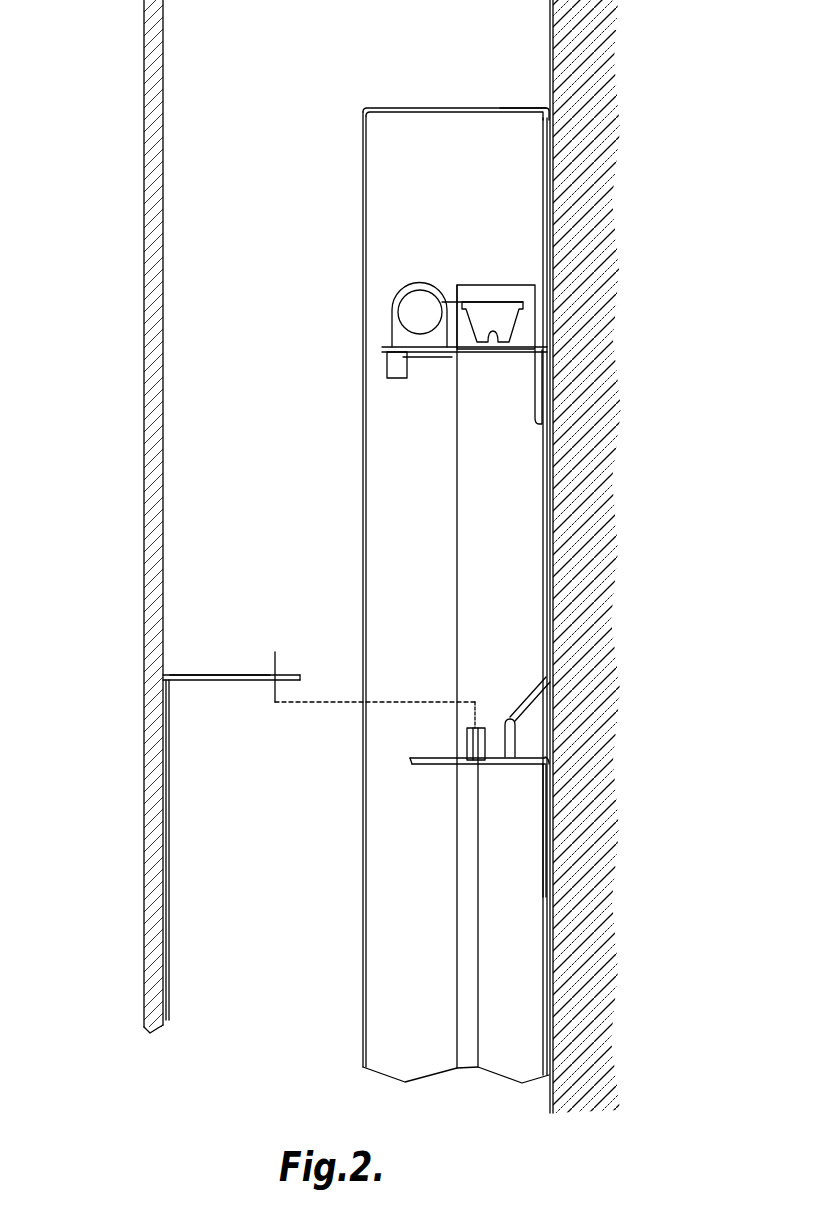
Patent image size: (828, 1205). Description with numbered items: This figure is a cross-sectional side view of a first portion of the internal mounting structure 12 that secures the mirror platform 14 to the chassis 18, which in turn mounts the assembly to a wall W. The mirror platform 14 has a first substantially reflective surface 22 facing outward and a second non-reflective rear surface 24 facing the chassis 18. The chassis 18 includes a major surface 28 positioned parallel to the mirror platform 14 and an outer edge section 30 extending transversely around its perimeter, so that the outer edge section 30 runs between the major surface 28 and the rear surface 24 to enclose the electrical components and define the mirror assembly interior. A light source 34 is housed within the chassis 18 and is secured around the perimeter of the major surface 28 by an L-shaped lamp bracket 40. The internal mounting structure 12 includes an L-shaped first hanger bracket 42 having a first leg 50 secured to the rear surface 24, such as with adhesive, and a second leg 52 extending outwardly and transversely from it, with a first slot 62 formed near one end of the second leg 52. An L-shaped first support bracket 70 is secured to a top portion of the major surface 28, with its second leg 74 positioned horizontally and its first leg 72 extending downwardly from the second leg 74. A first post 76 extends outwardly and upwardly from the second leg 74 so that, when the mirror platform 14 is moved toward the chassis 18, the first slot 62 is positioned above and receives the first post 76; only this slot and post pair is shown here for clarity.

The wall W is at (606, 45).
The internal mounting structure 12 is at (304, 996).
The mirror platform 14 is at (138, 1032).
The chassis 18 is at (484, 86).
The first substantially reflective surface 22 is at (144, 157).
The second non-reflective, rear surface 24 is at (164, 250).
The major surface 28 is at (545, 180).
The outer edge section 30 is at (424, 107).
The light source 34 is at (418, 276).
The L-shaped lamp bracket 40 is at (432, 346).
The first hanger bracket 42 is at (248, 646).
The first leg 50 is at (166, 820).
The second leg 52 is at (209, 675).
The first slot 62 is at (278, 678).
The first support bracket 70 is at (542, 742).
The first leg 72 is at (543, 832).
The second leg 74 is at (412, 759).
The first post 76 is at (467, 730).